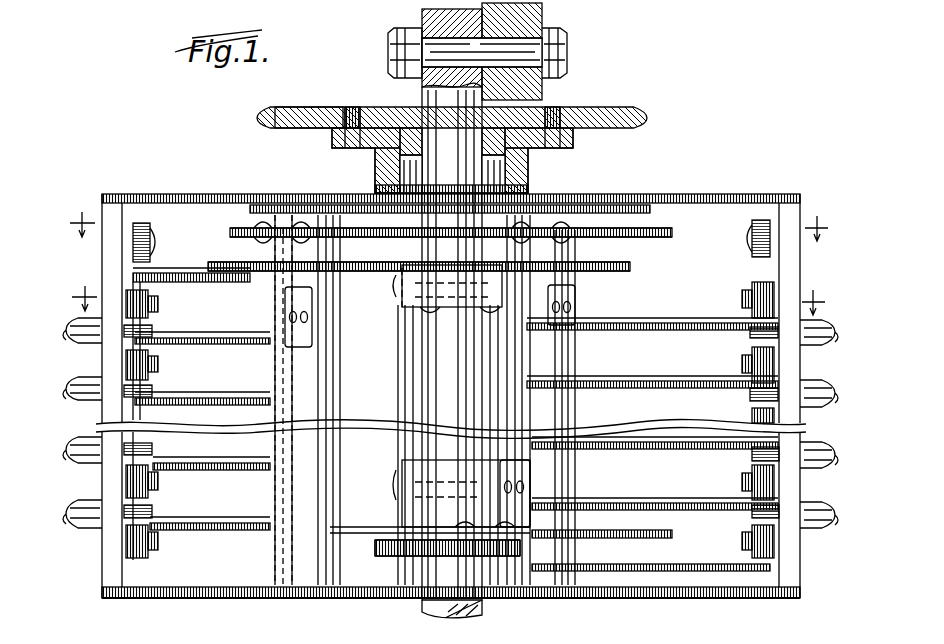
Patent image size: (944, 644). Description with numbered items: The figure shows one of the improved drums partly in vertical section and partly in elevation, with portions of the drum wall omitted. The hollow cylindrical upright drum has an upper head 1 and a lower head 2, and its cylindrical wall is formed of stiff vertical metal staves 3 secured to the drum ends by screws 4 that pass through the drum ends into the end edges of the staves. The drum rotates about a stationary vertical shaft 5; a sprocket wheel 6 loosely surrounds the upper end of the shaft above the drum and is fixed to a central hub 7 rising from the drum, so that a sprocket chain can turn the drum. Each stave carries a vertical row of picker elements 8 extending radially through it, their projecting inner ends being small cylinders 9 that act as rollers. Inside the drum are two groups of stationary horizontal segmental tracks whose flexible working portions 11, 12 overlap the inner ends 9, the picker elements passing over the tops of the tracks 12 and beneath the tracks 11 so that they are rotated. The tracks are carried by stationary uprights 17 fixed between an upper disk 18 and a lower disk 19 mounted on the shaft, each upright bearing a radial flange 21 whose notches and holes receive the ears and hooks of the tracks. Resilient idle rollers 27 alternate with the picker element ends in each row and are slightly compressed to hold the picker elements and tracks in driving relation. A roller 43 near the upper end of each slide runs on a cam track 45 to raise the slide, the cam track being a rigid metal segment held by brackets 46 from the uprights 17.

The upper head 1 is at (688, 193).
The lower head 2 is at (690, 592).
The stave 3 is at (447, 226).
The screw 4 is at (445, 300).
The stationary vertical shaft 5 is at (420, 441).
The sprocket wheel 6 is at (607, 107).
The central hub 7 is at (375, 156).
The picker element 8 is at (74, 388).
The inner end portion 9 is at (155, 326).
The track working portion 11 is at (684, 323).
The track working portion 12 is at (205, 338).
The stationary upright 17 is at (516, 353).
The upper horizontal disk 18 is at (656, 240).
The lower horizontal disk 19 is at (672, 532).
The radial flange 21 is at (258, 362).
The resilient idle roller 27 is at (158, 300).
The roller 43 is at (156, 240).
The cam track 45 is at (377, 270).
The bracket 46 is at (303, 326).